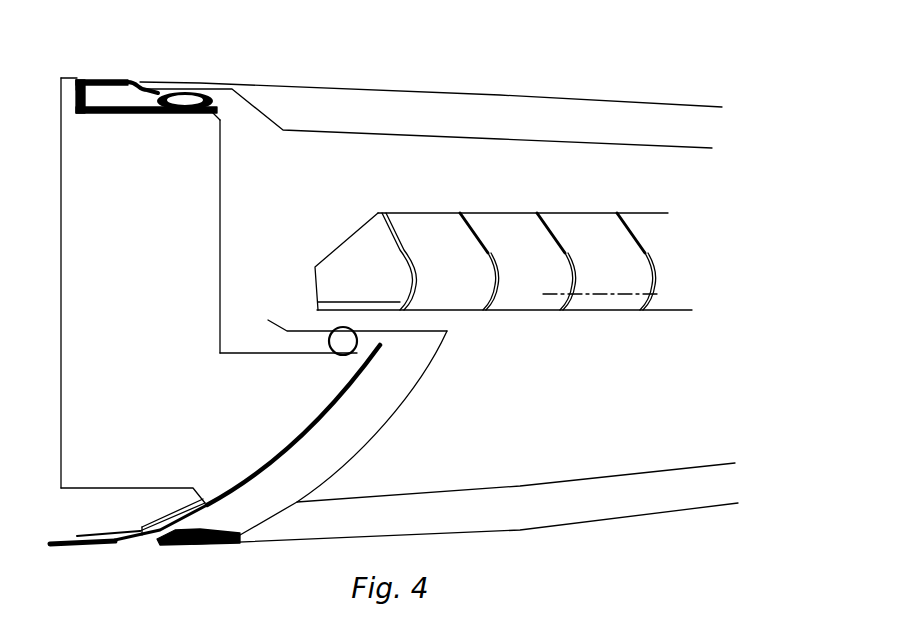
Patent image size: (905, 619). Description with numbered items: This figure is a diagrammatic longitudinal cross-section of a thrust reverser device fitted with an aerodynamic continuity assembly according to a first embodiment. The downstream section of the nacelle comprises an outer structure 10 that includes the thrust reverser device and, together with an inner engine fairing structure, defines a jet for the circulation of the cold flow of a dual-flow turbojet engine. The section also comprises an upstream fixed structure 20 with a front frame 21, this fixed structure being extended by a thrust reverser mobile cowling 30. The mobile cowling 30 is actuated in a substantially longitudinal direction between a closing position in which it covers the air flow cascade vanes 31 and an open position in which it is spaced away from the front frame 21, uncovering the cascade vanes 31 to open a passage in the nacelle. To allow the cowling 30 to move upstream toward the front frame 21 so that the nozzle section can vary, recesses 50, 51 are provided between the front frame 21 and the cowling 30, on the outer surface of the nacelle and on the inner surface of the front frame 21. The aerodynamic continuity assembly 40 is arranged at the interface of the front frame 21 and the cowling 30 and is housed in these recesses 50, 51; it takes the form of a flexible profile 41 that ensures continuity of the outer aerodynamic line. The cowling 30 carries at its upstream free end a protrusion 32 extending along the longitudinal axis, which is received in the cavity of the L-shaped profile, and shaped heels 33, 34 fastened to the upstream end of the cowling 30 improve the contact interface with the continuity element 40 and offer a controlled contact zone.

The outer structure 10 is at (568, 70).
The upstream fixed structure 20 is at (92, 232).
The front frame 21 is at (93, 348).
The thrust reverser mobile cowling 30 is at (418, 115).
The air flow cascade vanes 31 is at (585, 234).
The protrusion 32 is at (218, 82).
The heel 33 is at (131, 85).
The heel 34 is at (175, 548).
The aerodynamic continuity assembly 40 is at (103, 72).
The flexible profile 41 is at (128, 80).
The recess 50 is at (80, 75).
The recess 51 is at (110, 547).